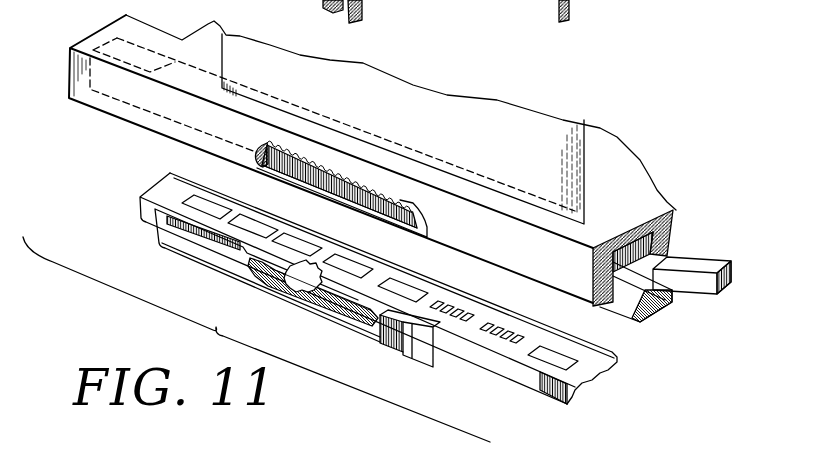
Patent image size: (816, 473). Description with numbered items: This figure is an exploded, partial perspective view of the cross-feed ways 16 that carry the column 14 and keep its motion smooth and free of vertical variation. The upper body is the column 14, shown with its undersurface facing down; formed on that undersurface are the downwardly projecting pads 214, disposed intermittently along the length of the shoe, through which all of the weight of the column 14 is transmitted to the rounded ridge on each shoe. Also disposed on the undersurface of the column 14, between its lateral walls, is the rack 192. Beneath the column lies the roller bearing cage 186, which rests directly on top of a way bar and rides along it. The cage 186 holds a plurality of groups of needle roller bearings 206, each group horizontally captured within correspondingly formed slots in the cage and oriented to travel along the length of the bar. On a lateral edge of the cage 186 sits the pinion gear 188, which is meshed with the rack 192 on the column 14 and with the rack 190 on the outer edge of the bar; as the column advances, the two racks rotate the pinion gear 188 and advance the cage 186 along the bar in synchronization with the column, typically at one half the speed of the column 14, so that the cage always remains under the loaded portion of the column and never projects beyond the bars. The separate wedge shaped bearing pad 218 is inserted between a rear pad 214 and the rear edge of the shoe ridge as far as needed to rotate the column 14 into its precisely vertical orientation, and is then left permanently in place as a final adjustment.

The column 14 is at (389, 117).
The ways 16 is at (128, 153).
The roller bearing cage 186 is at (497, 342).
The pinion gear 188 is at (283, 283).
The rack 190 is at (358, 325).
The rack 192 is at (363, 176).
The needle roller bearings 206 is at (460, 311).
The pads 214 is at (110, 44).
The wedge shaped bearing pad 218 is at (703, 262).